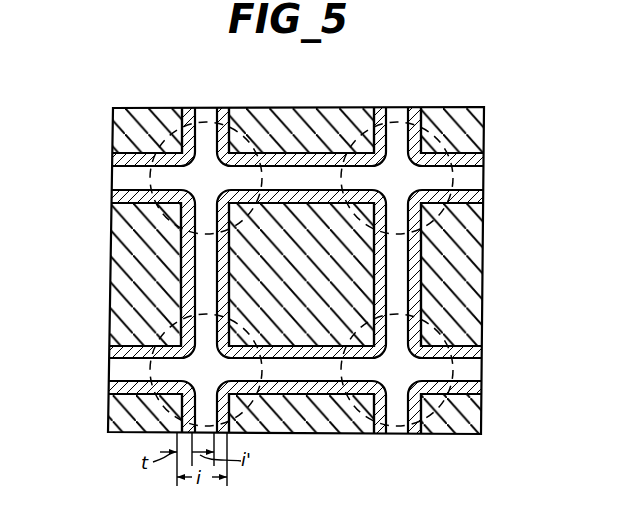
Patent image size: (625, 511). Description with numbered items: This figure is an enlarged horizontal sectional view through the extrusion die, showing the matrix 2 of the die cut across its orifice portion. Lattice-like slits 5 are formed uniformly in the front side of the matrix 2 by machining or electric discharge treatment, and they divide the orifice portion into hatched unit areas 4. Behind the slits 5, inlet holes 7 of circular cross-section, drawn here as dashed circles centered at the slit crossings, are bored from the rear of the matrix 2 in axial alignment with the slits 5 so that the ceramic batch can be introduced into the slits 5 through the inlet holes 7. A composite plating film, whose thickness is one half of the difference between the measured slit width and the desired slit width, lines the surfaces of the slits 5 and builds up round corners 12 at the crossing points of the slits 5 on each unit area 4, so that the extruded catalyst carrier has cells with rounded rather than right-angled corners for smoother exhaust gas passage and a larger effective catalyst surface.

The matrix of the die 2 is at (500, 329).
The unit area of the orifice portion 4 is at (302, 133).
The slit of the die 5 is at (135, 177).
The inlet hole 7 is at (450, 178).
The round corner of the unit area 12 is at (363, 395).